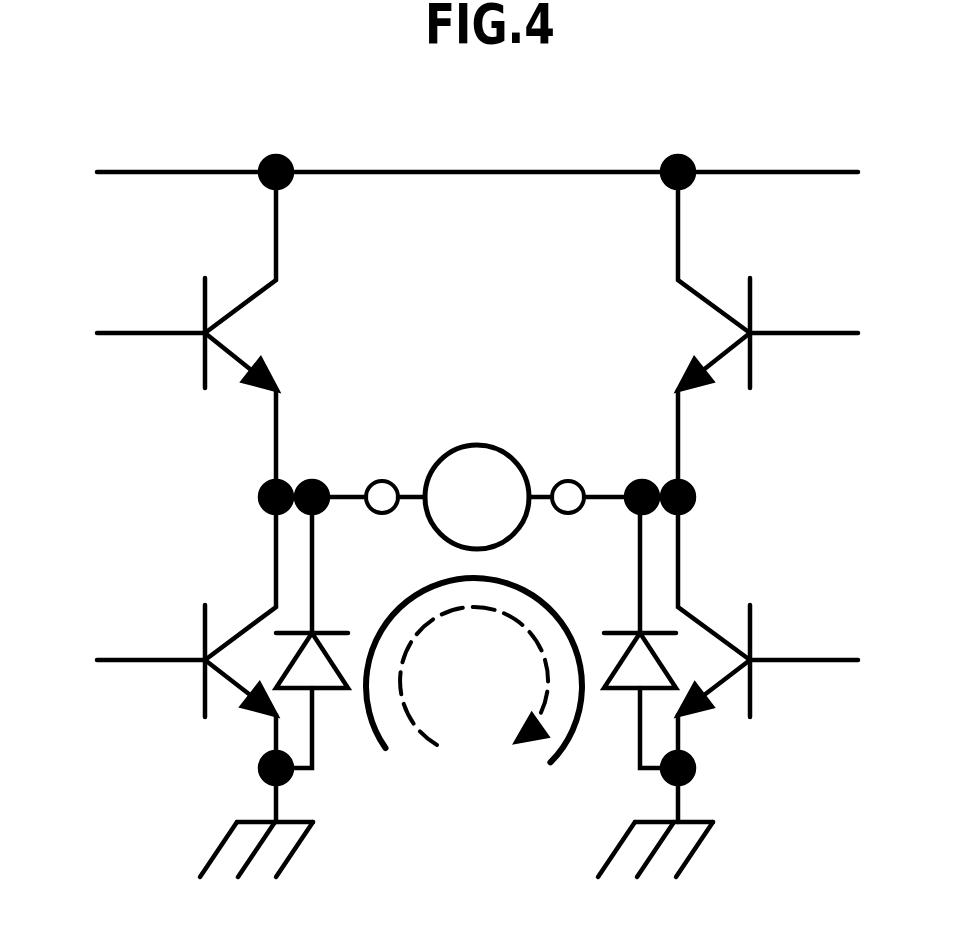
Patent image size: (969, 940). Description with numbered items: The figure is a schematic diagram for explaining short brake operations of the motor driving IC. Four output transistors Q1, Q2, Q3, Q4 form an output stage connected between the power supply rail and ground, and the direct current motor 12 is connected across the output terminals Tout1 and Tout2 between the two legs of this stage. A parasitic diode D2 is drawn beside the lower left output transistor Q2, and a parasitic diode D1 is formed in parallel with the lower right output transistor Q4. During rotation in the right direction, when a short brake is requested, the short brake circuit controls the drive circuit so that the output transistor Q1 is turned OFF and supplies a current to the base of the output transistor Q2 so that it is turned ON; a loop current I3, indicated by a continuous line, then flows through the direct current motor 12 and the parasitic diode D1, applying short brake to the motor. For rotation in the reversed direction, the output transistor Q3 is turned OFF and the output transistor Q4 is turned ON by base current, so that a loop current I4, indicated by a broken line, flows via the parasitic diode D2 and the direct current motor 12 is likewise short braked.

The output transistor Q1 is at (187, 334).
The output transistor Q2 is at (186, 632).
The output transistor Q3 is at (768, 334).
The output transistor Q4 is at (768, 632).
The parasitic diode D1 is at (629, 632).
The parasitic diode D2 is at (324, 632).
The output terminal Tout1 is at (383, 495).
The output terminal Tout2 is at (569, 495).
The direct current motor 12 is at (477, 443).
The loop current I3 is at (397, 727).
The loop current I4 is at (458, 608).